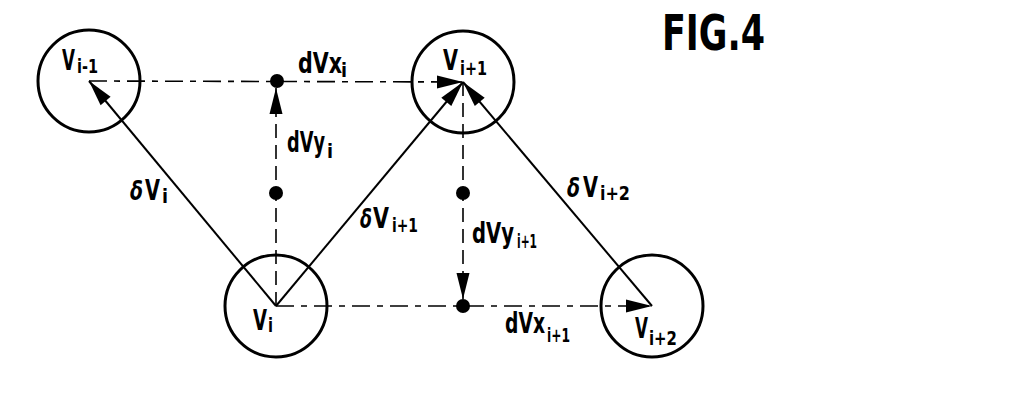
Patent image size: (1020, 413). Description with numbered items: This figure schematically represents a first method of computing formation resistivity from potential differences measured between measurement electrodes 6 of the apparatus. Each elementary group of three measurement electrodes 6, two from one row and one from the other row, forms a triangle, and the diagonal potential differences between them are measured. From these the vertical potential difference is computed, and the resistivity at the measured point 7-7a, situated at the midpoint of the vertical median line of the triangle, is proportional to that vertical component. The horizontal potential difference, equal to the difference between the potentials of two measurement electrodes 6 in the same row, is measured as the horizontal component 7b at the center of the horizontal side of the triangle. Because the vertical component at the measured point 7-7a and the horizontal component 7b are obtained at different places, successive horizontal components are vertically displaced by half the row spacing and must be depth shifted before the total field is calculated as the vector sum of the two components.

The measurement electrode 6 is at (689, 262).
The measured point and vertical component 7-7a is at (476, 188).
The horizontal component 7b is at (459, 316).